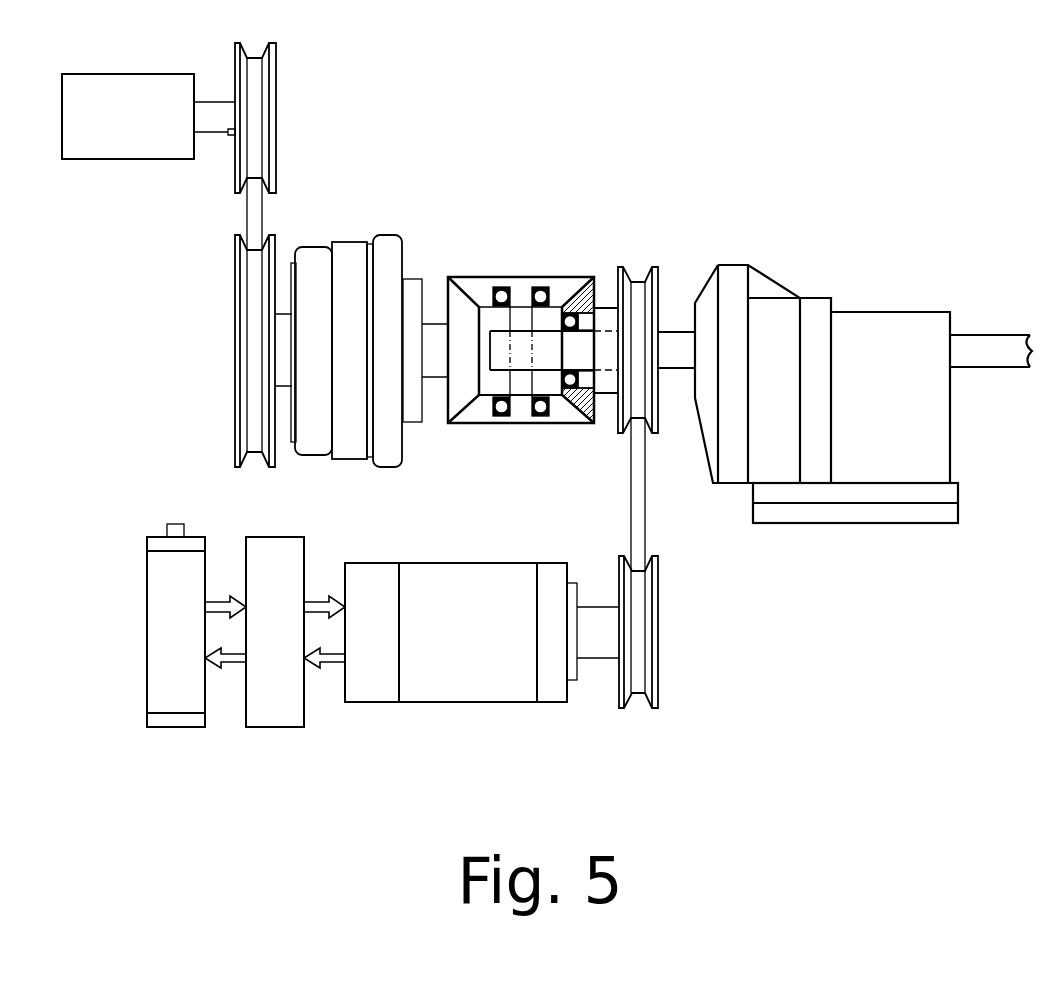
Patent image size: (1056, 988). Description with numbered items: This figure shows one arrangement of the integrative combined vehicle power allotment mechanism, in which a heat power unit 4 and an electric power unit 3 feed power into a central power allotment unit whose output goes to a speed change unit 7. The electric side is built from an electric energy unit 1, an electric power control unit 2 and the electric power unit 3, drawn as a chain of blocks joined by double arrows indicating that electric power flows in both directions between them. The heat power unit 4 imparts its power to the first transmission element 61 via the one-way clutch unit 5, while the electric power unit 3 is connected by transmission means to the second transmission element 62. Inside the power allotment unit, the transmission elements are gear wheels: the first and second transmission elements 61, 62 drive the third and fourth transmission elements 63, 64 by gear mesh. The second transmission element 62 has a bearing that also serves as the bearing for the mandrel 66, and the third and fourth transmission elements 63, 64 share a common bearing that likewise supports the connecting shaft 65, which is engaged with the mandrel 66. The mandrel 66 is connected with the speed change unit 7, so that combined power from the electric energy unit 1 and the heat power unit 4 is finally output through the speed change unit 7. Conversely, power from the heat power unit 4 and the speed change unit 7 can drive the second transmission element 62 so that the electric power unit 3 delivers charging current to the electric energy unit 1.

The electric energy unit 1 is at (179, 709).
The electric power control unit 2 is at (277, 712).
The electric power unit 3 is at (457, 687).
The heat power unit 4 is at (142, 125).
The one-way clutch unit 5 is at (317, 297).
The speed change unit 7 is at (849, 323).
The first transmission element 61 is at (458, 310).
The second transmission element 62 is at (594, 290).
The third transmission element 63 is at (562, 288).
The fourth transmission element 64 is at (483, 413).
The connecting shaft 65 is at (518, 323).
The mandrel 66 is at (543, 358).